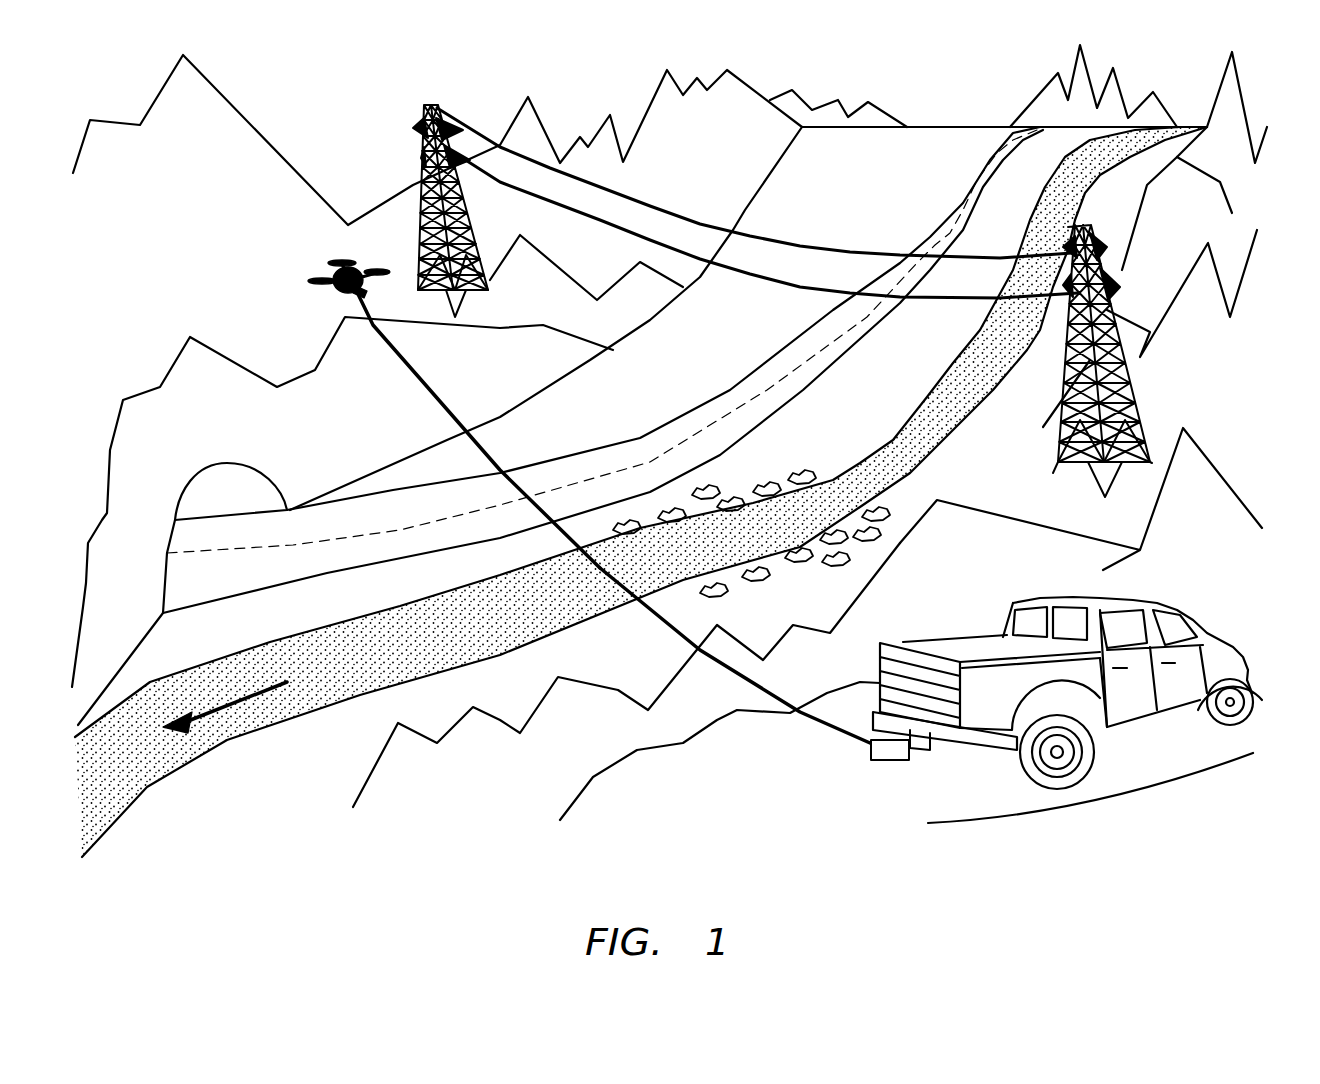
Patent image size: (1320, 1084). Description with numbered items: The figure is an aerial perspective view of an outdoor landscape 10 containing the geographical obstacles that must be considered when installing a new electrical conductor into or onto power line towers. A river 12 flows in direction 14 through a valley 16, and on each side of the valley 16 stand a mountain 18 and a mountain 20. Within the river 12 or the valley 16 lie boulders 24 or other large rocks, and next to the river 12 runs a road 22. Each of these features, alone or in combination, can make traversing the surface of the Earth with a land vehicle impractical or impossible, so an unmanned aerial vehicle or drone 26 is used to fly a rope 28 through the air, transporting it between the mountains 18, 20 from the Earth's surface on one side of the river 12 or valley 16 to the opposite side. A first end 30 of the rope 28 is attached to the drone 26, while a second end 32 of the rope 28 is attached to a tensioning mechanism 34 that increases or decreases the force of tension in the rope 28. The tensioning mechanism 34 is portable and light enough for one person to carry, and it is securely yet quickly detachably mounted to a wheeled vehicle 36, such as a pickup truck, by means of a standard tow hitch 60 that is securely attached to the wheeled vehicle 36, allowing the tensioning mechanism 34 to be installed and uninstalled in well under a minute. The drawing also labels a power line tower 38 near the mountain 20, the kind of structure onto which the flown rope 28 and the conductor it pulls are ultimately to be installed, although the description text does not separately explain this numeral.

The outdoor landscape 10 is at (921, 98).
The river 12 is at (450, 632).
The direction 14 is at (233, 700).
The valley 16 is at (643, 663).
The mountain 18 is at (545, 308).
The mountain 20 is at (966, 539).
The road 22 is at (738, 393).
The boulders 24 is at (812, 470).
The drone 26 is at (367, 283).
The rope 28 is at (400, 360).
The first end 30 is at (333, 288).
The second end 32 is at (830, 720).
The tensioning mechanism 34 is at (880, 760).
The wheeled vehicle 36 is at (963, 630).
The transmission tower 38 is at (1133, 397).
The tow hitch 60 is at (920, 750).